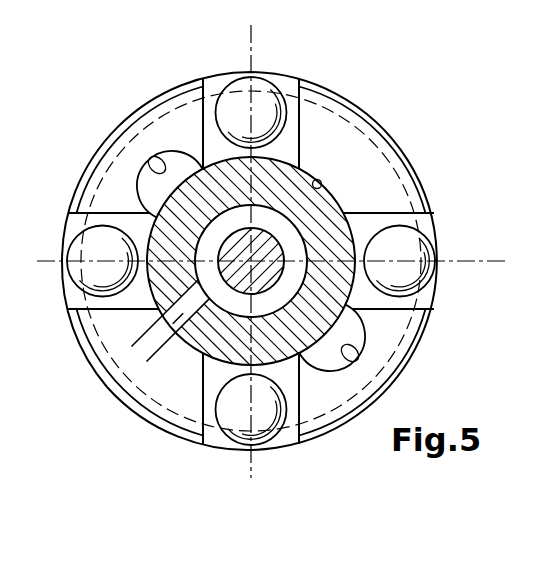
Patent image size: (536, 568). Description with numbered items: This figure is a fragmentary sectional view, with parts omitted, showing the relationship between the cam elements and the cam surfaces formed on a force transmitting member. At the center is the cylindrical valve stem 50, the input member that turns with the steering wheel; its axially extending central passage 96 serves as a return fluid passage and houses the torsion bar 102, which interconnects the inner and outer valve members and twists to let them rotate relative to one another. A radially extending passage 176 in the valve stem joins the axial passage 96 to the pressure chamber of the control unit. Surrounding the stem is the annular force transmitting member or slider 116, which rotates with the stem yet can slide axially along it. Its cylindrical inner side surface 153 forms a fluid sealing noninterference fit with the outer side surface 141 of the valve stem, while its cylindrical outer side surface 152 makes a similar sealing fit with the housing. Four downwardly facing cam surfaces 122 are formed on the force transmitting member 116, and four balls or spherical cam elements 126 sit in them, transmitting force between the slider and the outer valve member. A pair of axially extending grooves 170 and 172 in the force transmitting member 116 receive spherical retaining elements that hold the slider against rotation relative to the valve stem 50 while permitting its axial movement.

The valve stem 50 is at (343, 207).
The central passage 96 is at (270, 223).
The torsion bar 102 is at (328, 176).
The force transmitting member 116 is at (160, 95).
The cam surfaces 122 is at (212, 100).
The cam elements 126 is at (272, 80).
The outer side surface 141 is at (82, 349).
The outer side surface 152 is at (115, 130).
The inner side surface 153 is at (320, 181).
The axially extending groove 170 is at (147, 170).
The axially extending groove 172 is at (358, 344).
The radially extending passage 176 is at (107, 381).